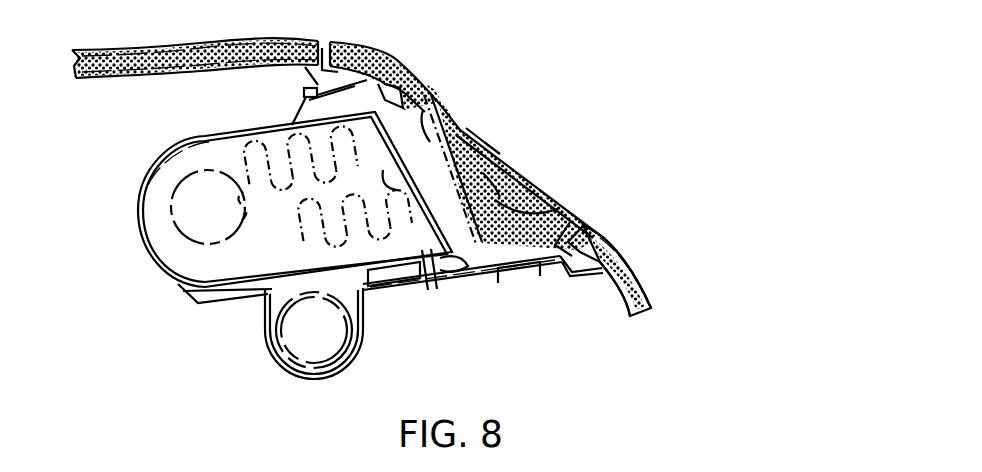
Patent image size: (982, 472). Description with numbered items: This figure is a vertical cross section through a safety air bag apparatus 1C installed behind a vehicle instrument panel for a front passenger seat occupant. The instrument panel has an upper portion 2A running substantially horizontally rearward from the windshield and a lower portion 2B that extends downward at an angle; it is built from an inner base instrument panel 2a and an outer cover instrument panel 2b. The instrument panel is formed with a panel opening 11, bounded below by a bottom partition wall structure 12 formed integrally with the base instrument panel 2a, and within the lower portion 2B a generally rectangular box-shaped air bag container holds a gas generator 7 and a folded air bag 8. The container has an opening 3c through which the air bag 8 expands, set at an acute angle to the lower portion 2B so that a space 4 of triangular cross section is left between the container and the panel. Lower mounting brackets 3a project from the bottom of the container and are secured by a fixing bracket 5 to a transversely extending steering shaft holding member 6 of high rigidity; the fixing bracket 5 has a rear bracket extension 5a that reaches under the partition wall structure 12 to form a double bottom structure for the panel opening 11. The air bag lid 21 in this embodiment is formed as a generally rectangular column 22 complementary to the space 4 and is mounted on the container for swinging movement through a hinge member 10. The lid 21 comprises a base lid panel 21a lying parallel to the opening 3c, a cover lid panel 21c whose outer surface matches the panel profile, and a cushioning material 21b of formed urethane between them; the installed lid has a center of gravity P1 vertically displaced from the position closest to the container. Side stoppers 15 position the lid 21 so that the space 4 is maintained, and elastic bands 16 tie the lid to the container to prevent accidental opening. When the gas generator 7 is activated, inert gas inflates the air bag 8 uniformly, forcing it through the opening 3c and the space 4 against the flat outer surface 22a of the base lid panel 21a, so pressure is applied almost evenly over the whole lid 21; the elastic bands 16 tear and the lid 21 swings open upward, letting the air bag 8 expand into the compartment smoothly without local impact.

The safety air bag apparatus 1C is at (114, 233).
The upper portion of instrument panel 2A is at (277, 14).
The lower portion of instrument panel 2B is at (618, 258).
The base instrument panel 2a is at (615, 290).
The cover instrument panel 2b is at (648, 298).
The lower mounting brackets 3a is at (183, 292).
The opening of air bag container 3c is at (404, 76).
The space 4 is at (467, 280).
The fixing bracket 5 is at (265, 322).
The rear bracket extension 5a is at (456, 281).
The steering shaft holding member 6 is at (297, 368).
The gas generator 7 is at (153, 258).
The air bag 8 is at (270, 212).
The hinge member 10 is at (303, 96).
The panel opening 11 is at (321, 43).
The lower rail step 12 is at (530, 265).
The side stoppers 15 is at (418, 182).
The elastic bands 16 is at (505, 270).
The air bag lid 21 is at (445, 86).
The base lid panel 21a is at (474, 128).
The cushioning material 21b is at (490, 145).
The cover lid panel 21c is at (536, 188).
The rectangular column 22 is at (482, 168).
The flat outer surface of base lid panel 22a is at (433, 140).
The center of gravity P1 is at (562, 200).